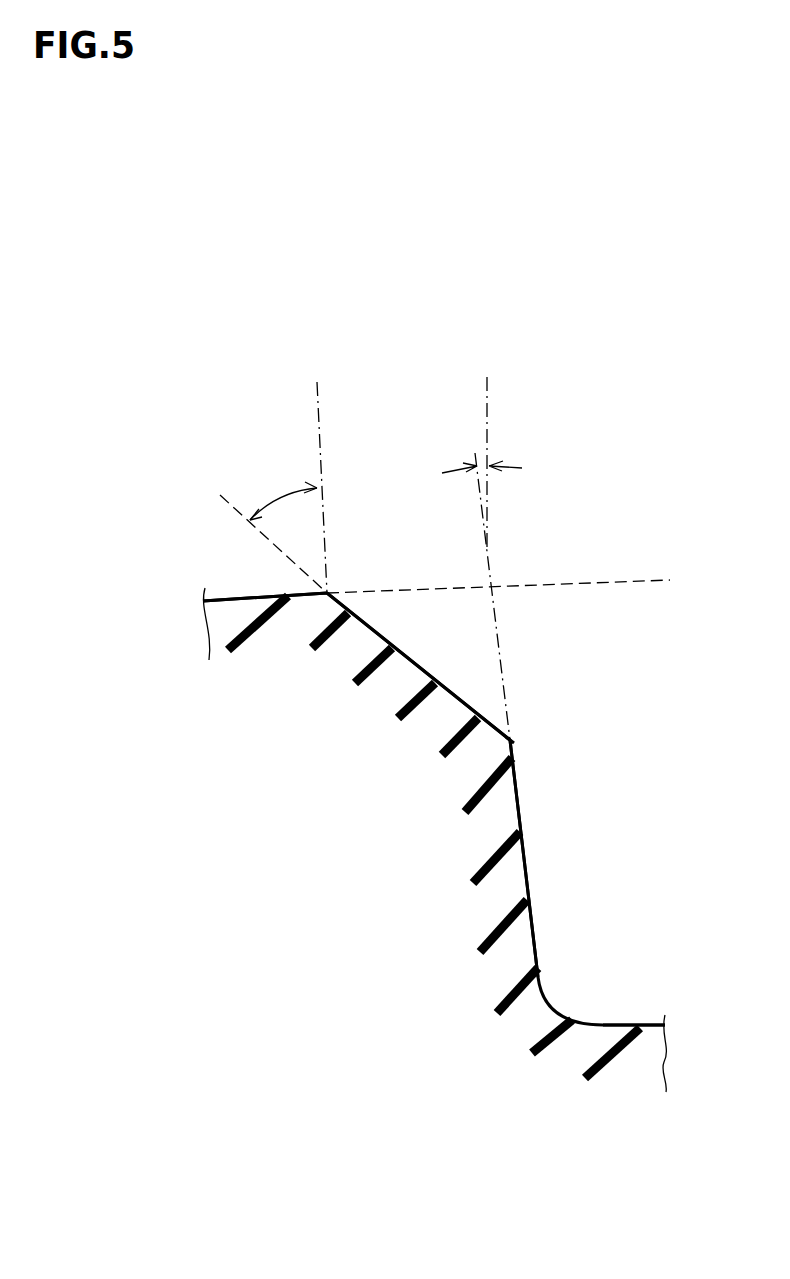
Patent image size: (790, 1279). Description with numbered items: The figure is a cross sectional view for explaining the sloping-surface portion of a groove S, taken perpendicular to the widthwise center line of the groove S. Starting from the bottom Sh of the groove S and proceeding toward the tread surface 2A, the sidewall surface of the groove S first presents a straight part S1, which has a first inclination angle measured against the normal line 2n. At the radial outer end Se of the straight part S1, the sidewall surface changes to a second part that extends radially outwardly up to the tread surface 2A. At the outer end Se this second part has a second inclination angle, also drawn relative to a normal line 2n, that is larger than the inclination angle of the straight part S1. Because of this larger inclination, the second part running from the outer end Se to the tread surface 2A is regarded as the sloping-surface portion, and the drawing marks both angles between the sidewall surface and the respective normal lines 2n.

The normal line of the tire surface 2n is at (317, 420).
The tread surface 2A is at (230, 597).
The radial outer end Se is at (510, 740).
The groove S is at (658, 853).
The straight part S1 is at (524, 872).
The bottom Sh is at (645, 1025).